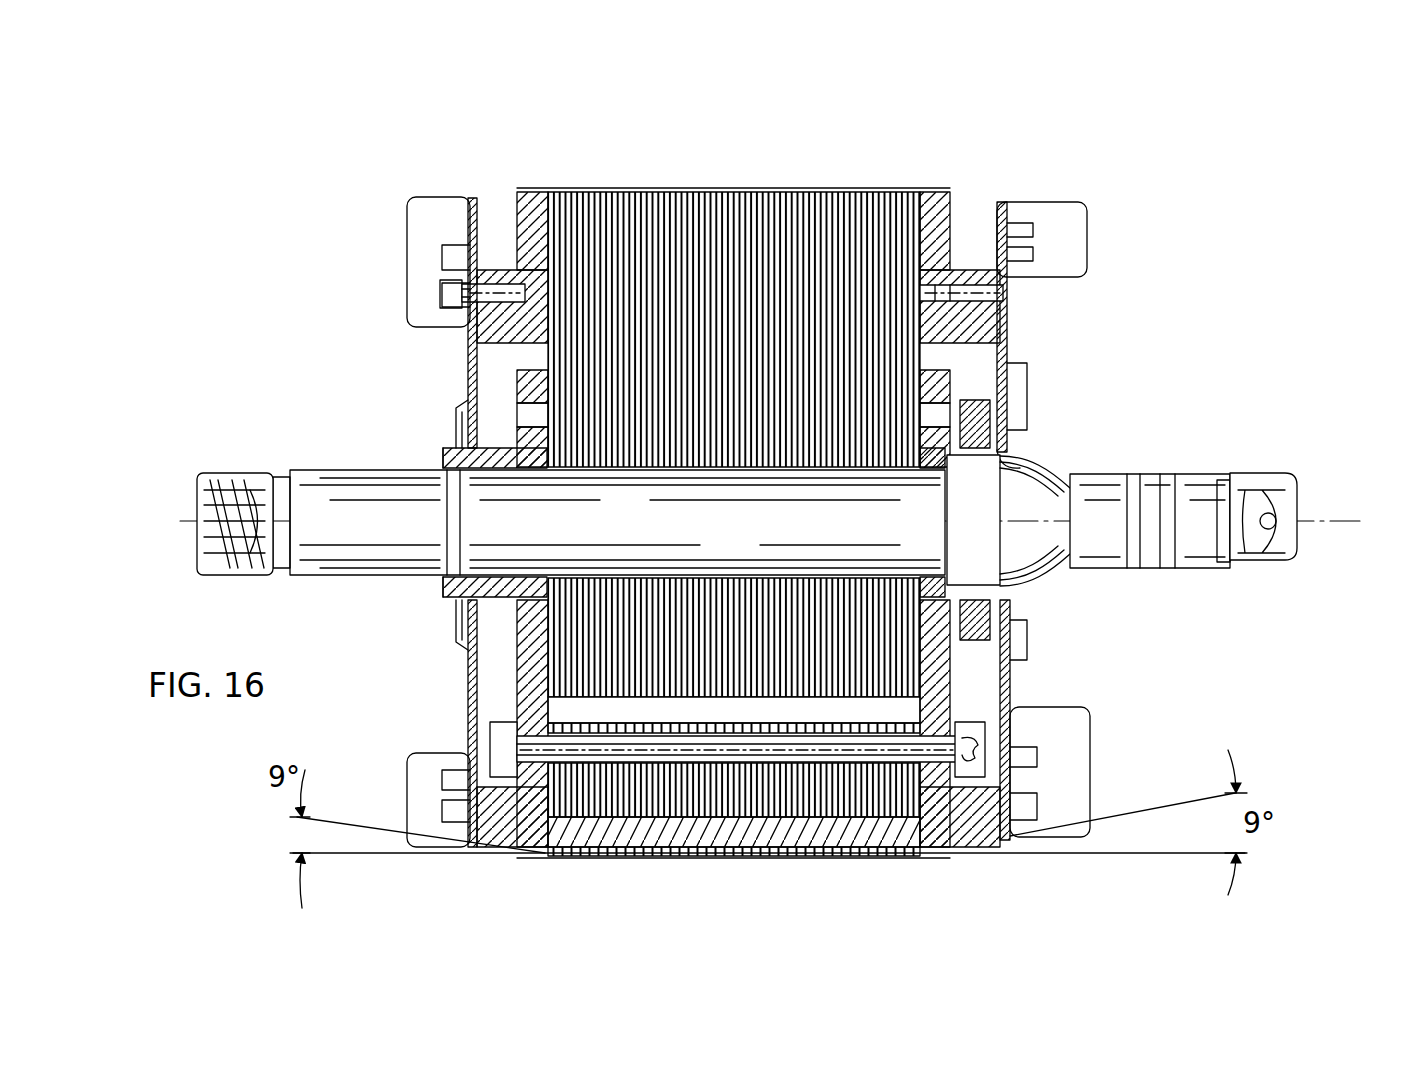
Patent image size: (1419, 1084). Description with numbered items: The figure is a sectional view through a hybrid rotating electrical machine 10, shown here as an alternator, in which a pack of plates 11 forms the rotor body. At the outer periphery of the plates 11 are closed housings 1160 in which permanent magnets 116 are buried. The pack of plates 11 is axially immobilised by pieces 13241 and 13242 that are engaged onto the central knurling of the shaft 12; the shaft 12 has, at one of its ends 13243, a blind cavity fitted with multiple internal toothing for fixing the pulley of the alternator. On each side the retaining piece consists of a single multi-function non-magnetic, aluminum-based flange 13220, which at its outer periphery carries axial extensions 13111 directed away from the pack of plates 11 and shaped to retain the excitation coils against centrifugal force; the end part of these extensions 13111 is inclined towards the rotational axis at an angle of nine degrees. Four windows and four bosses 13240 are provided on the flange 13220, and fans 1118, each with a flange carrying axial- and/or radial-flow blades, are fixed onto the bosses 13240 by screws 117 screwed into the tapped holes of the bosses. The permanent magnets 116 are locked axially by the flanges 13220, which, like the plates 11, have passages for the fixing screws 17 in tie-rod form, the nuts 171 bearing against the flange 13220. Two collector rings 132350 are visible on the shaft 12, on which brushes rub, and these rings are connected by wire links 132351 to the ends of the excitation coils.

The electric motor 10 is at (677, 186).
The plates 11 is at (850, 800).
The permanent magnets 116 is at (800, 820).
The housings 1160 is at (660, 830).
The fans 1118 is at (417, 212).
The fastening screw 117 is at (978, 266).
The shaft 12 is at (400, 580).
The axial extensions 13111 is at (515, 840).
The multi-function non-magnetic flange 13220 is at (532, 204).
The bosses 13240 is at (1007, 362).
The piece 13241 is at (530, 445).
The piece 13242 is at (466, 444).
The shaft end 13243 is at (233, 500).
The collector rings 132350 is at (1250, 572).
The wire links 132351 is at (1040, 466).
The fixing screws 17 is at (975, 732).
The nuts 171 is at (488, 746).